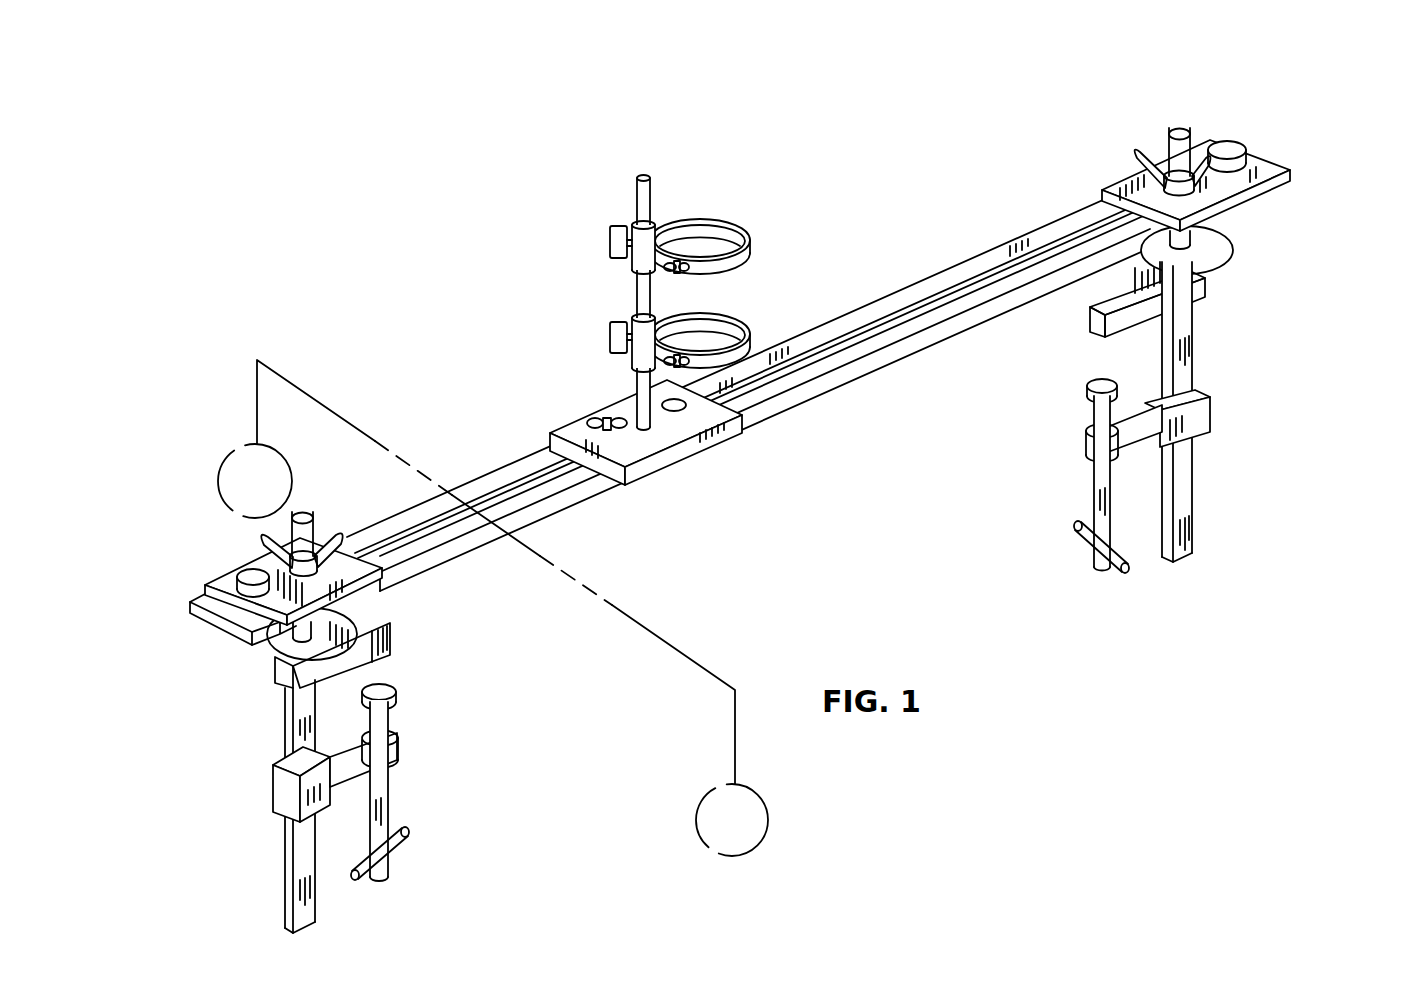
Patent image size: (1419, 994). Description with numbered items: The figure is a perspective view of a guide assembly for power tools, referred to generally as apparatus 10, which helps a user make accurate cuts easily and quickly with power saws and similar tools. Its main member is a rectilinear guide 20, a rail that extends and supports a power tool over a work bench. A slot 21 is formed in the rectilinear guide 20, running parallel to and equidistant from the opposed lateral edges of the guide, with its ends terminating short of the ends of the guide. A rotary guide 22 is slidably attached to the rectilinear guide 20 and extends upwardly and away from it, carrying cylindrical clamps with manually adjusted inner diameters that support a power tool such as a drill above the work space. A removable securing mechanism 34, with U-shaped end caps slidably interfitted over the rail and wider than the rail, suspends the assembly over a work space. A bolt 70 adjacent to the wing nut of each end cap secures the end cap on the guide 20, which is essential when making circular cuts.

The guide assembly apparatus 10 is at (203, 216).
The rectilinear guide 20 is at (925, 292).
The slot 21 is at (986, 283).
The rotary guide 22 is at (592, 292).
The removable securing mechanism 34 is at (176, 583).
The bolt 70 is at (250, 578).